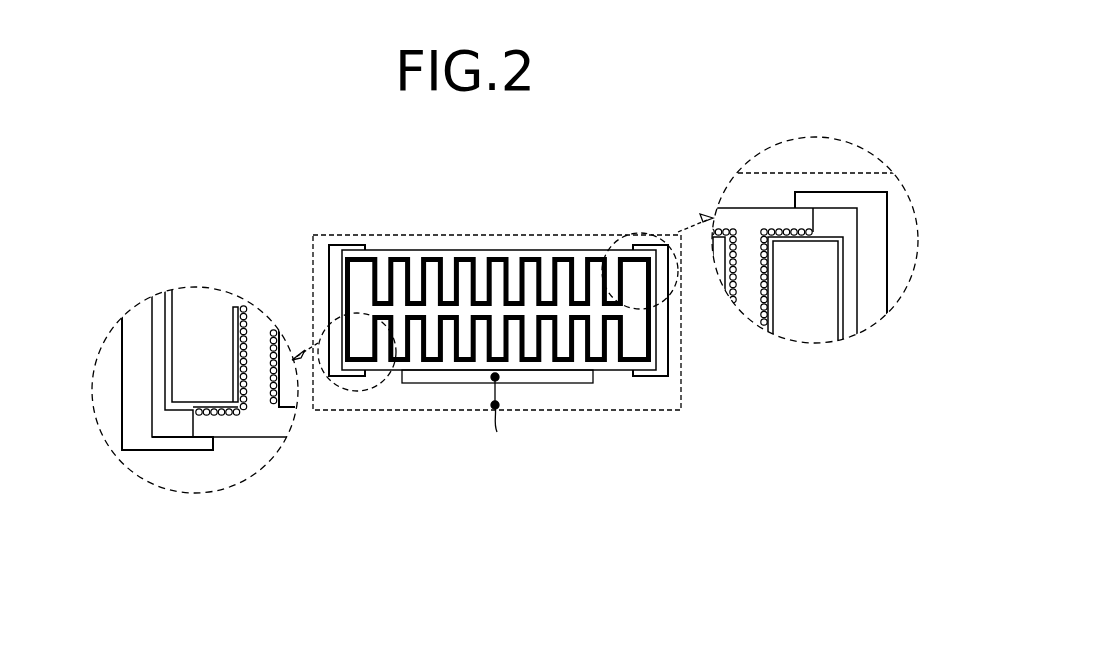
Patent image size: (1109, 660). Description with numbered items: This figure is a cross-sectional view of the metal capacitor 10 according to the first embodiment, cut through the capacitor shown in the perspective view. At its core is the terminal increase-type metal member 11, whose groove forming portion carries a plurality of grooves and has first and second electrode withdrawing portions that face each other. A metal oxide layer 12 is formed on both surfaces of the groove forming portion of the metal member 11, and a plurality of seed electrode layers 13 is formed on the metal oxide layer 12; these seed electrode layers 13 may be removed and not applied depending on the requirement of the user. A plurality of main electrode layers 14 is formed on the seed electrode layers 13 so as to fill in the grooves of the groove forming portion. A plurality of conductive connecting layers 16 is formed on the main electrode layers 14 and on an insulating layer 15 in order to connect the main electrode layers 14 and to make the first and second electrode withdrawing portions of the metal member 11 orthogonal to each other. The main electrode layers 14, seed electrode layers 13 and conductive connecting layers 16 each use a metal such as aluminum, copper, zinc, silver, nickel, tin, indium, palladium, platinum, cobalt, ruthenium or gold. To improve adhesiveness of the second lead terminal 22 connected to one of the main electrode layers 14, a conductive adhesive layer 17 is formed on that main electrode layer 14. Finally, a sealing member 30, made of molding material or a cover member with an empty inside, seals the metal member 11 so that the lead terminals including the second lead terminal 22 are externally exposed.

The metal capacitor 10 is at (519, 206).
The terminal increase-type metal member 11 is at (353, 285).
The metal oxide layer 12 is at (837, 336).
The seed electrode layers 13 is at (282, 412).
The main electrode layers 14 is at (413, 251).
The insulating layer 15 is at (190, 425).
The conductive connecting layers 16 is at (345, 249).
The conductive adhesive layer 17 is at (413, 383).
The second lead terminal 22 is at (500, 419).
The sealing member 30 is at (598, 413).